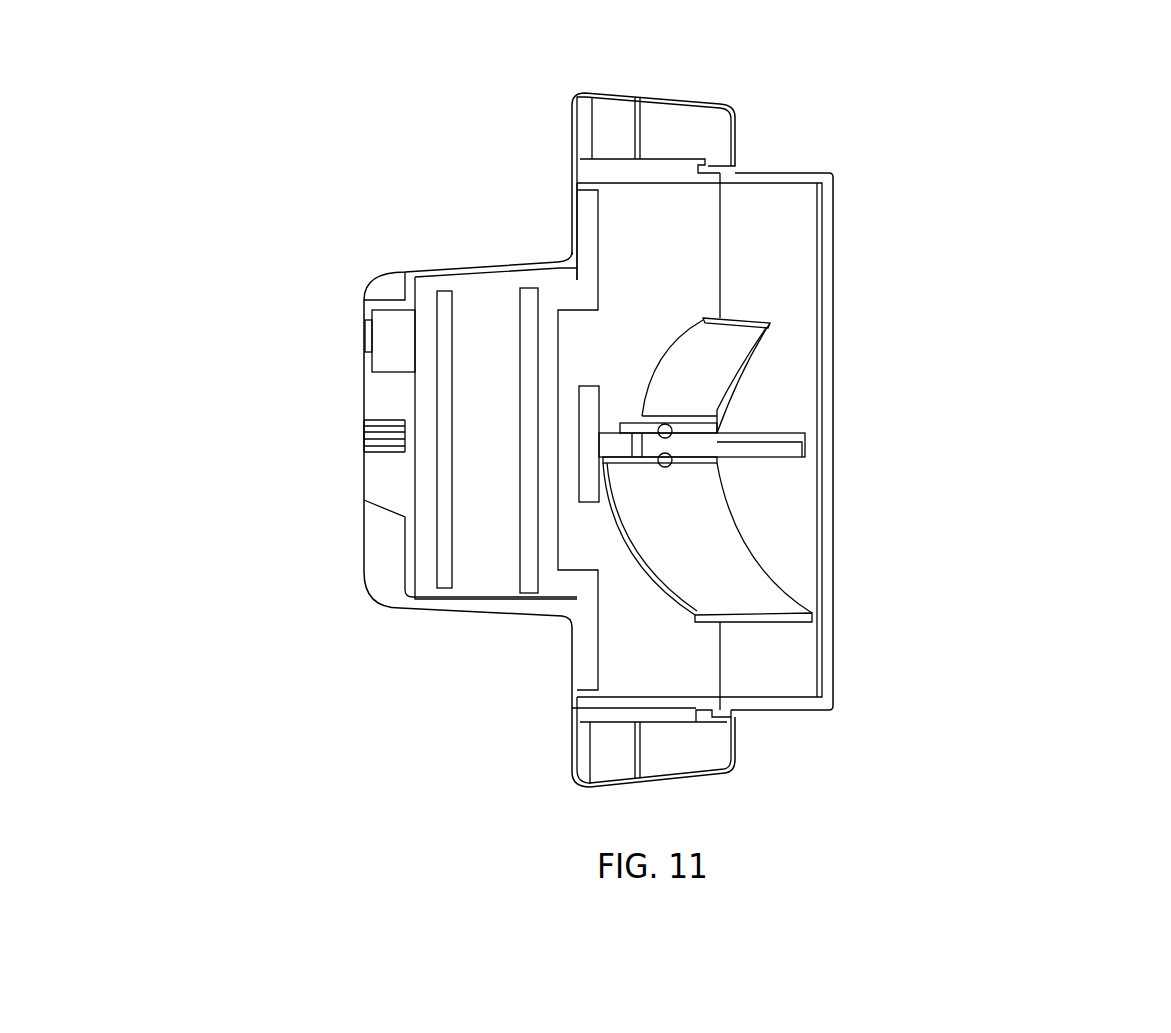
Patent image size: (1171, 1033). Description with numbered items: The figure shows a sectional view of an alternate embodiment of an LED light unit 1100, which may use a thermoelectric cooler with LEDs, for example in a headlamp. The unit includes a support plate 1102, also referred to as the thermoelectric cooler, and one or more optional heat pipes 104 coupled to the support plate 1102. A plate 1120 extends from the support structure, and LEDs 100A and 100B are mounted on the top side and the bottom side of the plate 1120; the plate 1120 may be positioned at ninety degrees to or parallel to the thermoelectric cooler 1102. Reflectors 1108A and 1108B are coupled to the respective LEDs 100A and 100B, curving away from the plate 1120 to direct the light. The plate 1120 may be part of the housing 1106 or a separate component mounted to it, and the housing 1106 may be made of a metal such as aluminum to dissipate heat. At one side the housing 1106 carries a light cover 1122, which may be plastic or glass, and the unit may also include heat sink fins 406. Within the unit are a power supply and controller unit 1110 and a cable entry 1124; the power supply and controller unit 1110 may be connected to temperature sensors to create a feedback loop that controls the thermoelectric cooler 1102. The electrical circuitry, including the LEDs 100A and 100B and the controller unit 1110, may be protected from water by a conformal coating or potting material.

The LED light unit 1100 is at (1135, 118).
The housing 1106 is at (603, 165).
The heat sink fins 406 is at (692, 130).
The support plate 1102 is at (587, 203).
The power supply and controller unit 1110 is at (447, 300).
The heat pipes 104 is at (532, 295).
The cable entry 1124 is at (393, 342).
The light cover 1122 is at (830, 191).
The reflector 1108A is at (722, 335).
The reflector 1108B is at (740, 598).
The LED 100A is at (668, 430).
The LED 100B is at (668, 463).
The plate 1120 is at (812, 446).